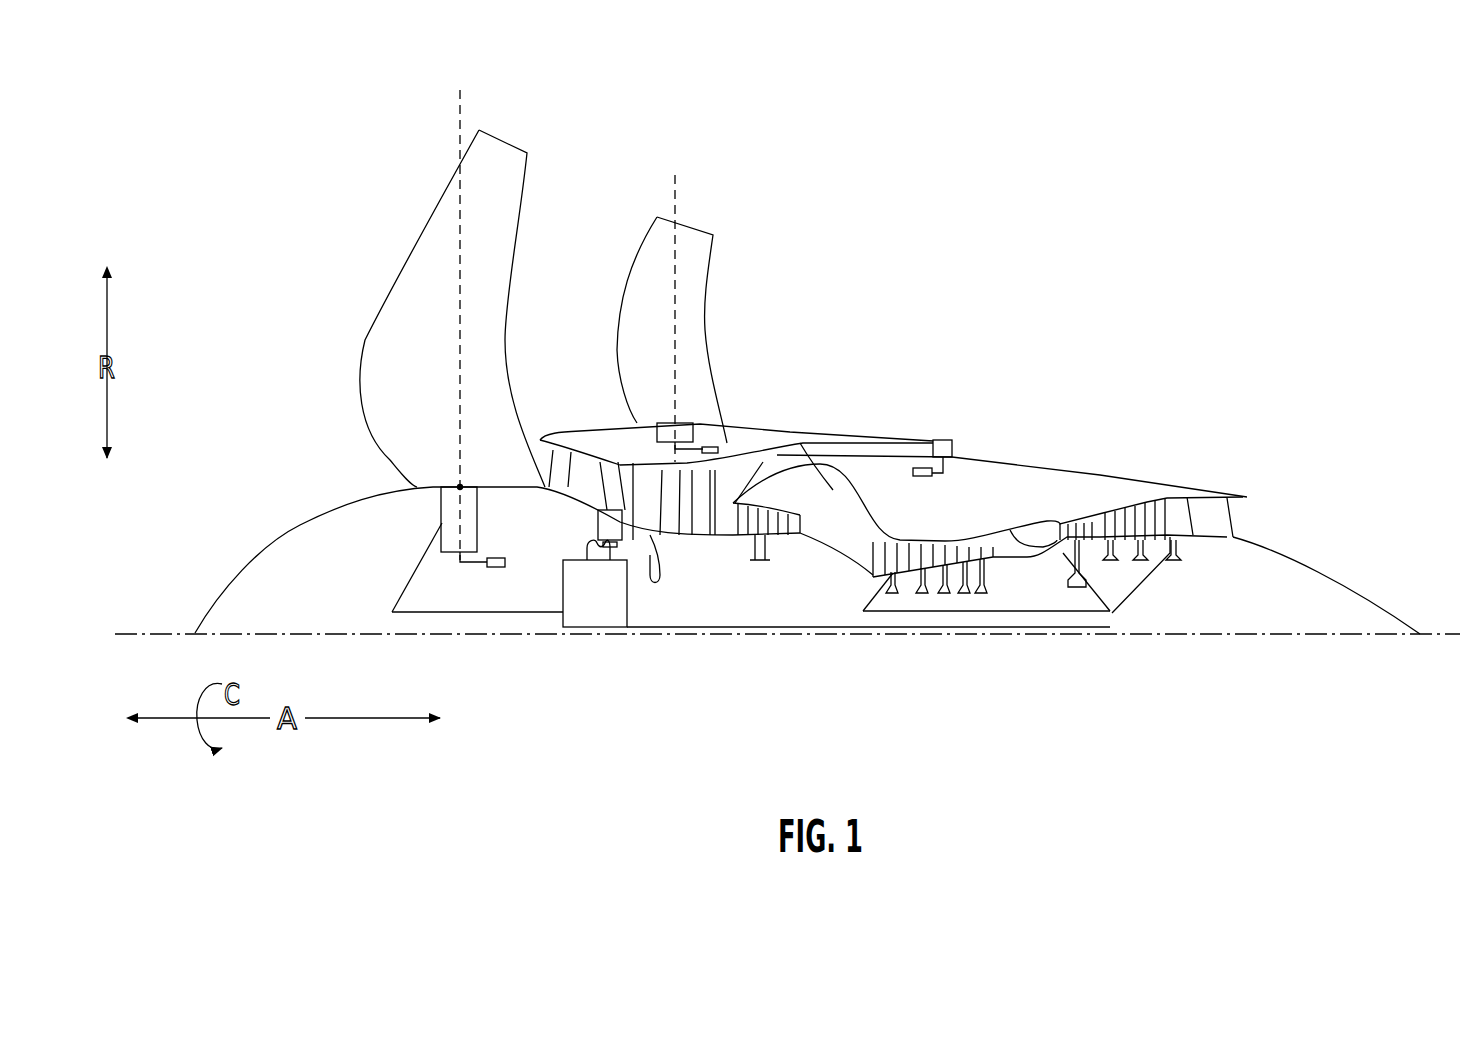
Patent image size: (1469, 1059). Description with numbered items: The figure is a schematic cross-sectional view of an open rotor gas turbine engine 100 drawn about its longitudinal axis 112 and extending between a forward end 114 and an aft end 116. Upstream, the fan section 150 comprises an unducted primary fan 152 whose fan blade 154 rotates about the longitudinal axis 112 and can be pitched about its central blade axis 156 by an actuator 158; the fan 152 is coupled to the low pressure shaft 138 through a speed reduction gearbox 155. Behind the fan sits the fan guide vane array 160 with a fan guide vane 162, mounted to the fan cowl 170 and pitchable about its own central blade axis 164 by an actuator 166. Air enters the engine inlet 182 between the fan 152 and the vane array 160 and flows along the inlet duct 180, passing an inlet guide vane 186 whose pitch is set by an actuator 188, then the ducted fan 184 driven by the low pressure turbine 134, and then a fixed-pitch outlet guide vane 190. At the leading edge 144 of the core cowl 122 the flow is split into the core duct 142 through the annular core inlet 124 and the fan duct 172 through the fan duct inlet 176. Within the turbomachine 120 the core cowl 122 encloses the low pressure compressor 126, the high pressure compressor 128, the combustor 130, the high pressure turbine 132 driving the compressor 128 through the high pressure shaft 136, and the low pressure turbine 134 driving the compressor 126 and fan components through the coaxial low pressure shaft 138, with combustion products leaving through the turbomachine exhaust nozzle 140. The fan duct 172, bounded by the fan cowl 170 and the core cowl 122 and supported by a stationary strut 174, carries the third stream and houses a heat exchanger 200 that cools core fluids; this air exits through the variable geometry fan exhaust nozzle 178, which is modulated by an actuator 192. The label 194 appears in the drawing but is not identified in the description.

The gas turbine engine 100 is at (1022, 258).
The longitudinal axis 112 is at (1445, 645).
The forward end 114 is at (195, 633).
The aft end 116 is at (1405, 615).
The turbomachine 120 is at (975, 520).
The core cowl 122 is at (957, 453).
The annular core inlet 124 is at (745, 540).
The low pressure compressor 126 is at (770, 567).
The high pressure compressor 128 is at (957, 585).
The combustor 130 is at (1018, 567).
The high pressure turbine 132 is at (1082, 513).
The low pressure turbine 134 is at (1150, 497).
The high pressure shaft 136 is at (1087, 613).
The low pressure shaft 138 is at (402, 590).
The turbomachine exhaust nozzle 140 is at (1217, 517).
The core duct 142 is at (1037, 533).
The leading edge of the core cowl 144 is at (720, 530).
The fan section 150 is at (218, 225).
The fan 152 is at (333, 307).
The fan blade 154 is at (410, 240).
The speed reduction gearbox 155 is at (600, 605).
The central blade axis 156 is at (457, 127).
The actuator 158 is at (489, 558).
The fan guide vane array 160 is at (603, 165).
The fan guide vane 162 is at (687, 310).
The central blade axis 164 is at (677, 195).
The actuator 166 is at (742, 443).
The fan cowl 170 is at (770, 445).
The fan duct 172 is at (806, 442).
The stationary strut 174 is at (833, 490).
The fan duct inlet 176 is at (690, 560).
The fan exhaust nozzle 178 is at (945, 442).
The inlet duct 180 is at (645, 545).
The engine inlet 182 is at (537, 460).
The ducted fan 184 is at (630, 487).
The inlet guide vane 186 is at (617, 483).
The actuator 188 is at (597, 528).
The outlet guide vane 190 is at (703, 470).
The actuator 192 is at (922, 476).
The bypass duct 194 is at (885, 343).
The heat exchanger 200 is at (763, 470).